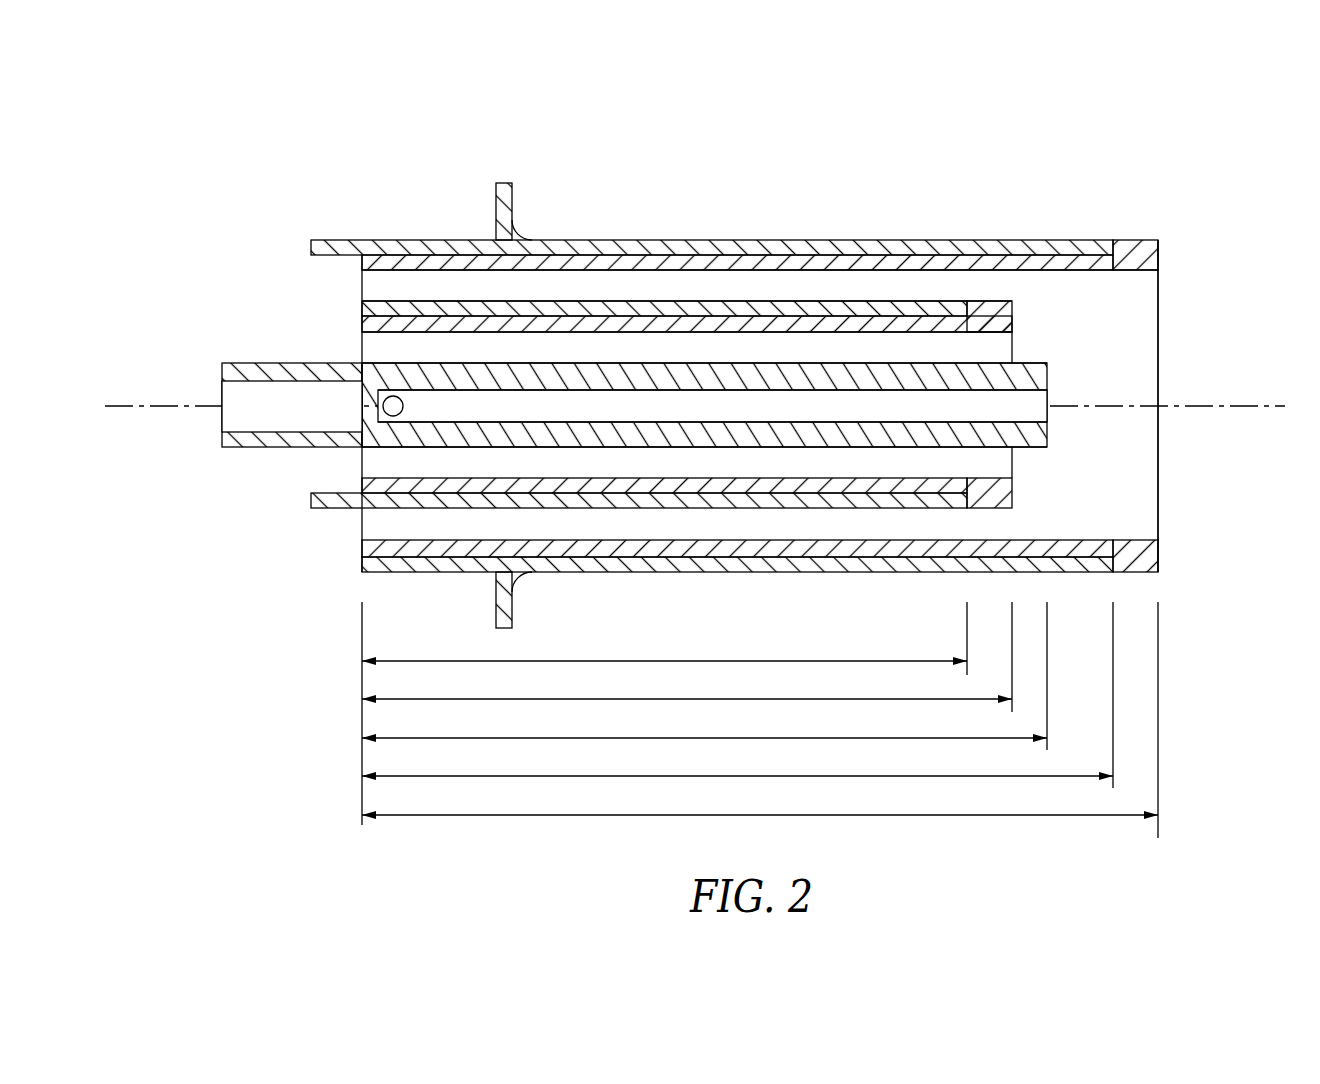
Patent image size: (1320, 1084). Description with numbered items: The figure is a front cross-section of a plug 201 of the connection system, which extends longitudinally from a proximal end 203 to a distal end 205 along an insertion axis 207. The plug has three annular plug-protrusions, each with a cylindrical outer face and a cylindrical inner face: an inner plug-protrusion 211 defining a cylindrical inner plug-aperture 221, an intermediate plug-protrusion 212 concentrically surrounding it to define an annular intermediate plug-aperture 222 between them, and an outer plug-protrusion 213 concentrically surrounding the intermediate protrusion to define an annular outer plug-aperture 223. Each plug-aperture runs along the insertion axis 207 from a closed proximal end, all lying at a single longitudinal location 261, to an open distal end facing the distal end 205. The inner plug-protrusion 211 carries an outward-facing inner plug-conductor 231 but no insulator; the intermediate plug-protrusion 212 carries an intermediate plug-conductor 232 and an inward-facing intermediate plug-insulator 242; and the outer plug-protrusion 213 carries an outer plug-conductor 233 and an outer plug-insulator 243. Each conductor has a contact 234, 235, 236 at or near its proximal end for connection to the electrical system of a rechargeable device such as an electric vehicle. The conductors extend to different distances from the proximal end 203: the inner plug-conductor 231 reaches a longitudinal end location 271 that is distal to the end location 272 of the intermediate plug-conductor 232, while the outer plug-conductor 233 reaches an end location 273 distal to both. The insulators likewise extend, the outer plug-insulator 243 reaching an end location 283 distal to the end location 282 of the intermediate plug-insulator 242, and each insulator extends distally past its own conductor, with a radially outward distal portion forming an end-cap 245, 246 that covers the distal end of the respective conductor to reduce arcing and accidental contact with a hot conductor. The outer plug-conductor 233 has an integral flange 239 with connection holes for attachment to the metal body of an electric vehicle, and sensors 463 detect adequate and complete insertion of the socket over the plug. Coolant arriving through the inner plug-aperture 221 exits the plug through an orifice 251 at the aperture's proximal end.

The plug 201 is at (1172, 118).
The proximal end 203 is at (362, 343).
The distal end 205 is at (1158, 465).
The insertion axis 207 is at (157, 403).
The inner plug-protrusion 211 is at (640, 398).
The intermediate plug-protrusion 212 is at (693, 340).
The outer plug-protrusion 213 is at (742, 277).
The inner plug-aperture 221 is at (1038, 396).
The intermediate plug-aperture 222 is at (990, 350).
The outer plug-aperture 223 is at (990, 293).
The inner plug-conductor 231 is at (795, 370).
The intermediate plug-conductor 232 is at (845, 307).
The outer plug-conductor 233 is at (893, 245).
The contact 234 is at (236, 449).
The contact 235 is at (326, 509).
The contact 236 is at (320, 240).
The flange 239 is at (496, 193).
The intermediate plug-insulator 242 is at (955, 328).
The outer plug-insulator 243 is at (1000, 258).
The end-cap 245 is at (1000, 499).
The end-cap 246 is at (1158, 560).
The orifice 251 is at (388, 416).
The longitudinal location 261 is at (362, 720).
The longitudinal end location 271 is at (1047, 720).
The longitudinal end location 272 is at (967, 643).
The longitudinal end location 273 is at (1113, 760).
The longitudinal end location 282 is at (1012, 682).
The longitudinal end location 283 is at (1158, 800).
The sensor 463 is at (524, 233).